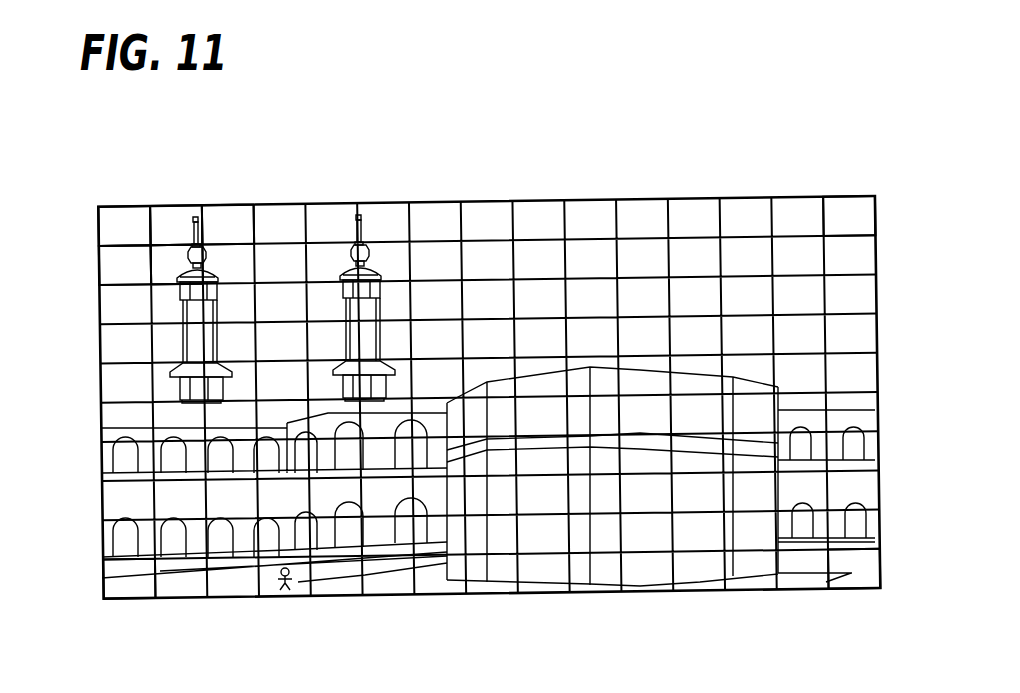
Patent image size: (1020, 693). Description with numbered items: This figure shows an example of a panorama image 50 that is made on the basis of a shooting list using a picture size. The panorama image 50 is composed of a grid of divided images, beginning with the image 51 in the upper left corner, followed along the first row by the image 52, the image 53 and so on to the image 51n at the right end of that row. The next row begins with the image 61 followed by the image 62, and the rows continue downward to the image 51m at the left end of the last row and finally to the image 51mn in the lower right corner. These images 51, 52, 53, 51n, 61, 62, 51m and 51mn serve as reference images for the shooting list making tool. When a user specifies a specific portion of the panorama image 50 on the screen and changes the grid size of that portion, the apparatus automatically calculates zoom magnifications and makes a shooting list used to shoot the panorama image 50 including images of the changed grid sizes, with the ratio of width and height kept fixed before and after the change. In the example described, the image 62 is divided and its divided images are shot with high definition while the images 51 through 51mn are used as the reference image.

The panorama image 50 is at (738, 186).
The image 51 is at (125, 215).
The image 52 is at (176, 215).
The image 53 is at (230, 213).
The image 51n is at (846, 207).
The image 51m is at (127, 590).
The image 51mn is at (853, 586).
The image 61 is at (106, 262).
The image 62 is at (161, 277).